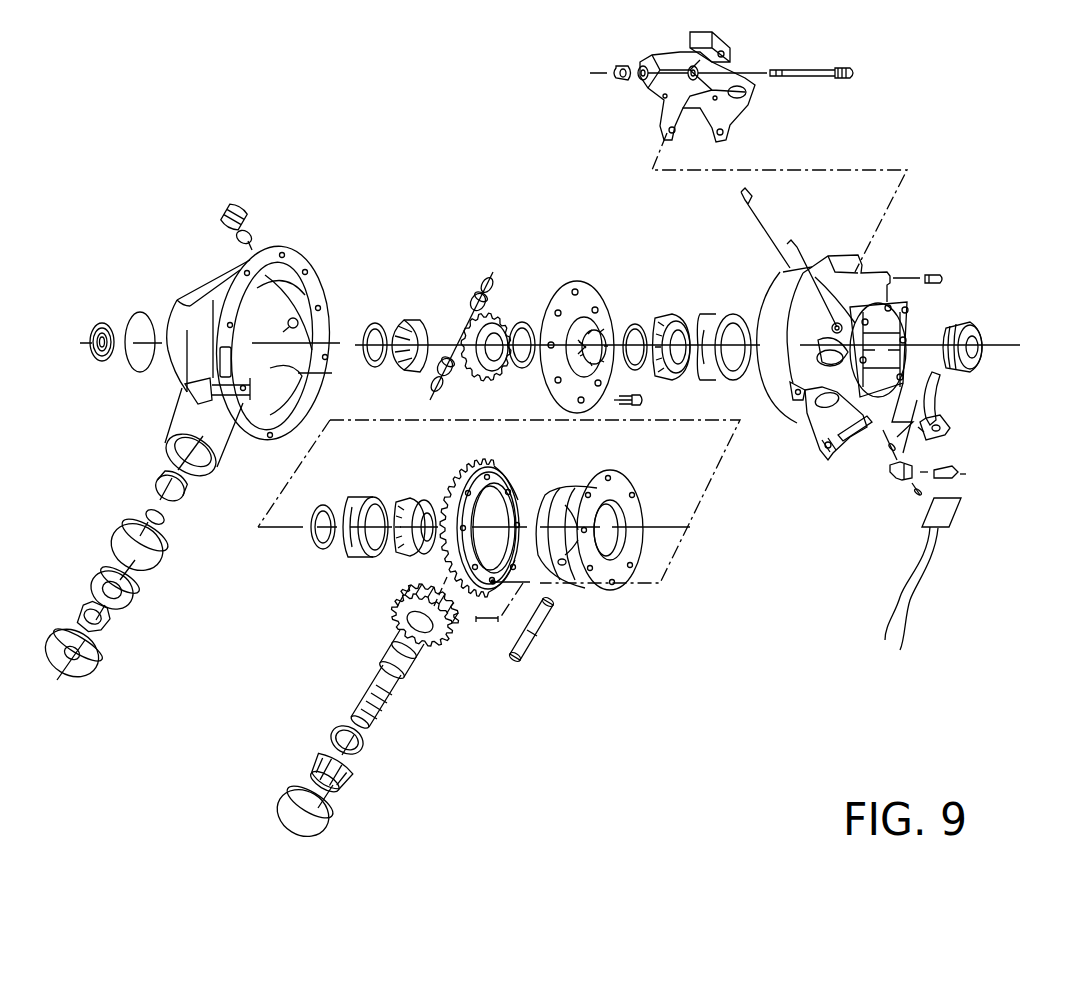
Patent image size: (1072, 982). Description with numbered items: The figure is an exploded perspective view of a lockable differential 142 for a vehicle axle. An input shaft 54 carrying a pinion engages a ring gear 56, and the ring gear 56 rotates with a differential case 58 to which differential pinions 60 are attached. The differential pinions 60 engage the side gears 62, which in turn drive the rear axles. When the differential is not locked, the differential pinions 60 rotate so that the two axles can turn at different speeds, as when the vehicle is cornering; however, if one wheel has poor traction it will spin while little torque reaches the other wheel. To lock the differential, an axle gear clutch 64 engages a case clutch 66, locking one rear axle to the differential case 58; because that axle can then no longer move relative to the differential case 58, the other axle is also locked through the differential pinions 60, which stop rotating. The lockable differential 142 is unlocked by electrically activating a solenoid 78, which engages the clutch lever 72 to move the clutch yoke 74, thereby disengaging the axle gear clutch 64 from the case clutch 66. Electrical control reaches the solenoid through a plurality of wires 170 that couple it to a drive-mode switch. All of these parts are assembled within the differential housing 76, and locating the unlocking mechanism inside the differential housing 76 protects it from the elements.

The input shaft 54 is at (398, 693).
The ring gear 56 is at (508, 462).
The differential case 58 is at (642, 549).
The differential pinions 60 is at (444, 362).
The side gears 62 is at (404, 316).
The axle gear clutch 64 is at (985, 326).
The case clutch 66 is at (602, 334).
The clutch lever 72 is at (960, 461).
The clutch yoke 74 is at (962, 410).
The differential housing 76 is at (197, 282).
The solenoid 78 is at (958, 522).
The lockable differential 142 is at (722, 672).
The wires 170 is at (922, 597).